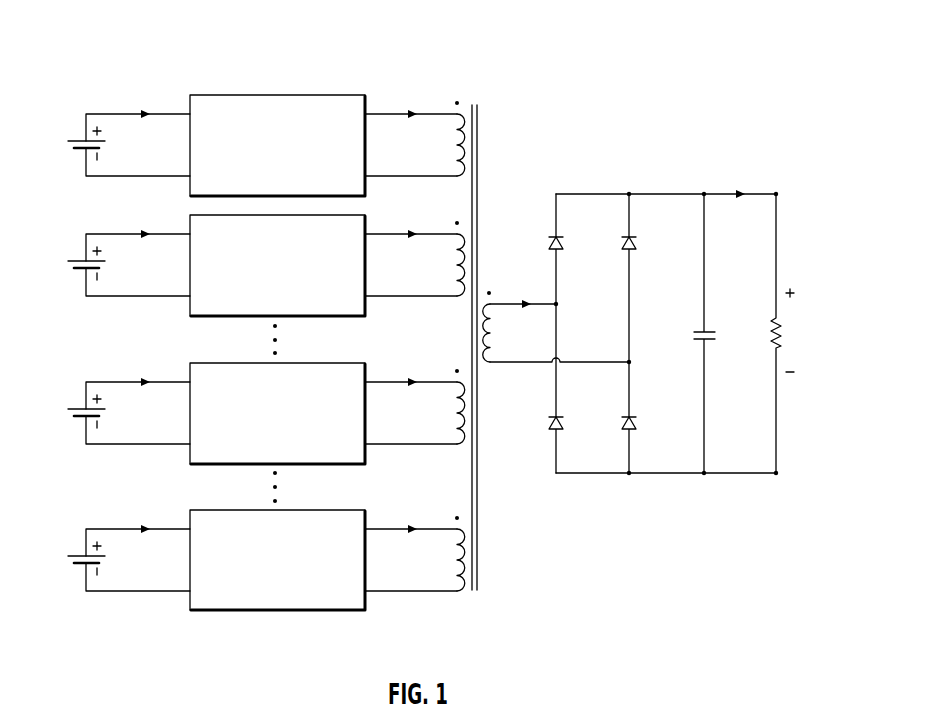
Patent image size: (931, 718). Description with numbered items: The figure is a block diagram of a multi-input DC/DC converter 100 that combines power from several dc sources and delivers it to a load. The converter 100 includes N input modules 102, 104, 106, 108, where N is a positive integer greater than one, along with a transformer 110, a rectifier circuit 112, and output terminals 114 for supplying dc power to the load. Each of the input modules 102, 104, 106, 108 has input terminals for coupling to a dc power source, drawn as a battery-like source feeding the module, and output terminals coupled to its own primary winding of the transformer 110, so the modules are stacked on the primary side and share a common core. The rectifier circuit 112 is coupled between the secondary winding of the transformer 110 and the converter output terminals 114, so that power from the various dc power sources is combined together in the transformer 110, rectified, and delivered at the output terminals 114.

The multi-input DC/DC converter 100 is at (286, 56).
The input module 102 is at (265, 182).
The input module 104 is at (265, 302).
The input module 106 is at (265, 450).
The input module 108 is at (265, 597).
The transformer 110 is at (475, 102).
The rectifier circuit 112 is at (629, 192).
The output terminals 114 is at (781, 473).